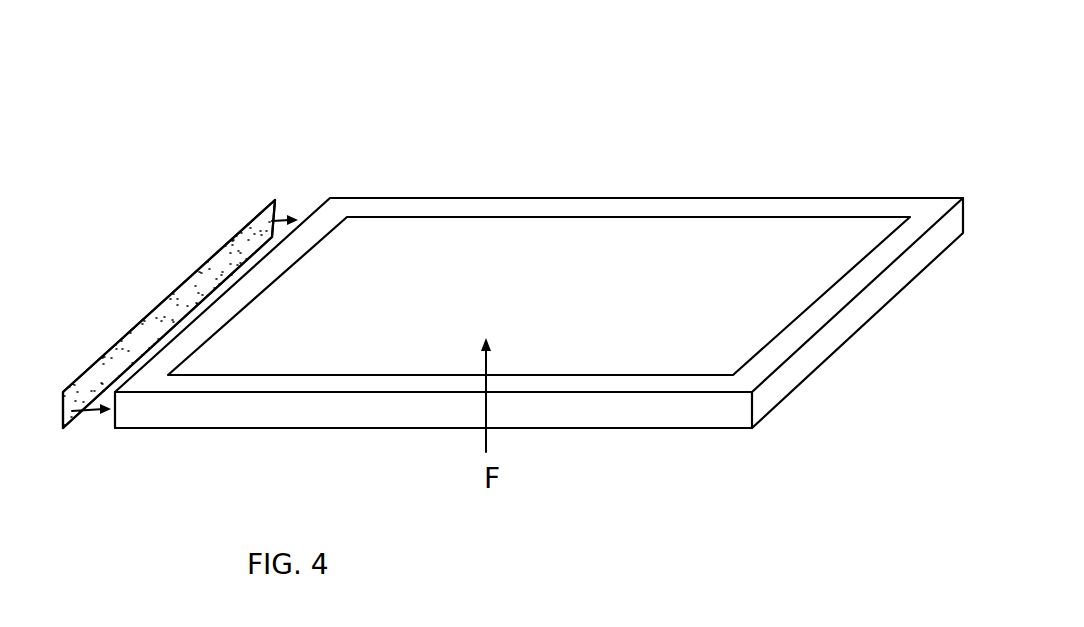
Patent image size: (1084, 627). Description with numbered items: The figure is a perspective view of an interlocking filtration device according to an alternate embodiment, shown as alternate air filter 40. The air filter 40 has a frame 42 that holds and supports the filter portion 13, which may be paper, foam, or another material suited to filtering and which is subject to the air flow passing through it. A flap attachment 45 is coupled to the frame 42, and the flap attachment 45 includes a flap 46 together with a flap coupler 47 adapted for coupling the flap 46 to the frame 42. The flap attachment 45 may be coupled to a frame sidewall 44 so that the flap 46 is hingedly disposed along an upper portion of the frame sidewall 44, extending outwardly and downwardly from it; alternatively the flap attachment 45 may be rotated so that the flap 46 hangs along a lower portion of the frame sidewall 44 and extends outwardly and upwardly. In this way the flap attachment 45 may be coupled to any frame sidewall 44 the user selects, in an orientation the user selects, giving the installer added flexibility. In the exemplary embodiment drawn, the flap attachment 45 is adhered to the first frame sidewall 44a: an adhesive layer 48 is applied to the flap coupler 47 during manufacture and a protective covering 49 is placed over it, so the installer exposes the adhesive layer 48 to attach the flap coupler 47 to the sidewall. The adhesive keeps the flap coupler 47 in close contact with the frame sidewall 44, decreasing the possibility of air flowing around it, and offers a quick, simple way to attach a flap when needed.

The alternate air filter 40 is at (585, 73).
The frame 42 is at (419, 194).
The filter portion 13 is at (667, 240).
The frame sidewall 44 is at (723, 418).
The first frame sidewall 44a is at (318, 408).
The flap attachment 45 is at (162, 281).
The flap 46 is at (45, 428).
The flap coupler 47 is at (227, 258).
The adhesive layer 48 is at (248, 240).
The protective covering 49 is at (277, 213).